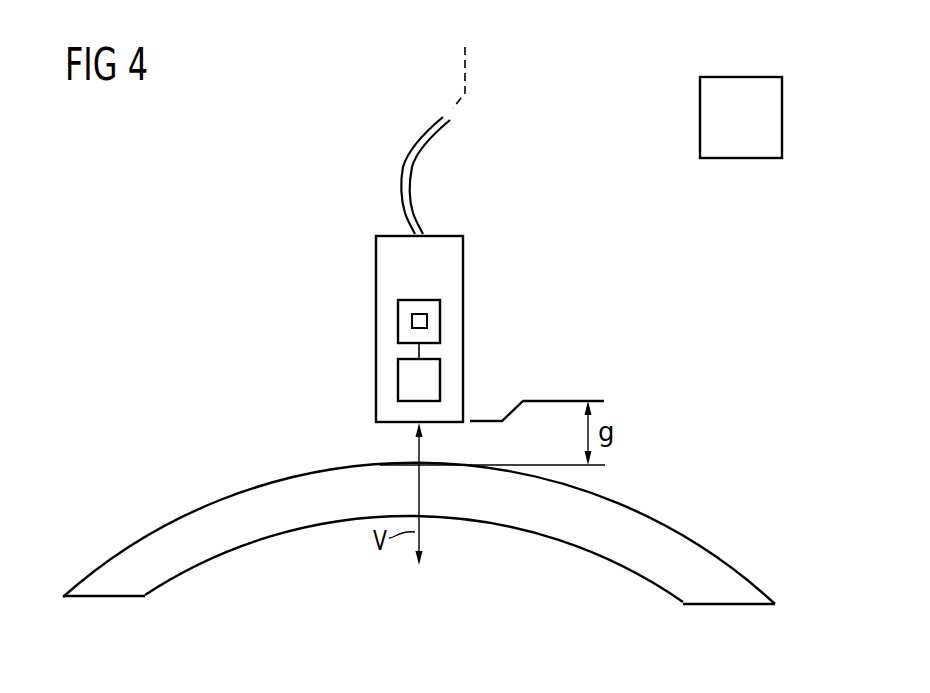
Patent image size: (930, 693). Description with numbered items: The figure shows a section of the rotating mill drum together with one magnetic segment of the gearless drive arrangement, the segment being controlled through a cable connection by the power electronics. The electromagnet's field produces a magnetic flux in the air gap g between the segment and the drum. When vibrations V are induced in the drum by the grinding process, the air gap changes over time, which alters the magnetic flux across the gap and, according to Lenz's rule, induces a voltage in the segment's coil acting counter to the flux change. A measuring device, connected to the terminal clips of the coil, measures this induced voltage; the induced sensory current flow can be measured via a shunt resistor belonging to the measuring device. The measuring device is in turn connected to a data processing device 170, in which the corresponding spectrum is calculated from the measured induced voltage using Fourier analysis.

The data processing device 170 is at (740, 158).